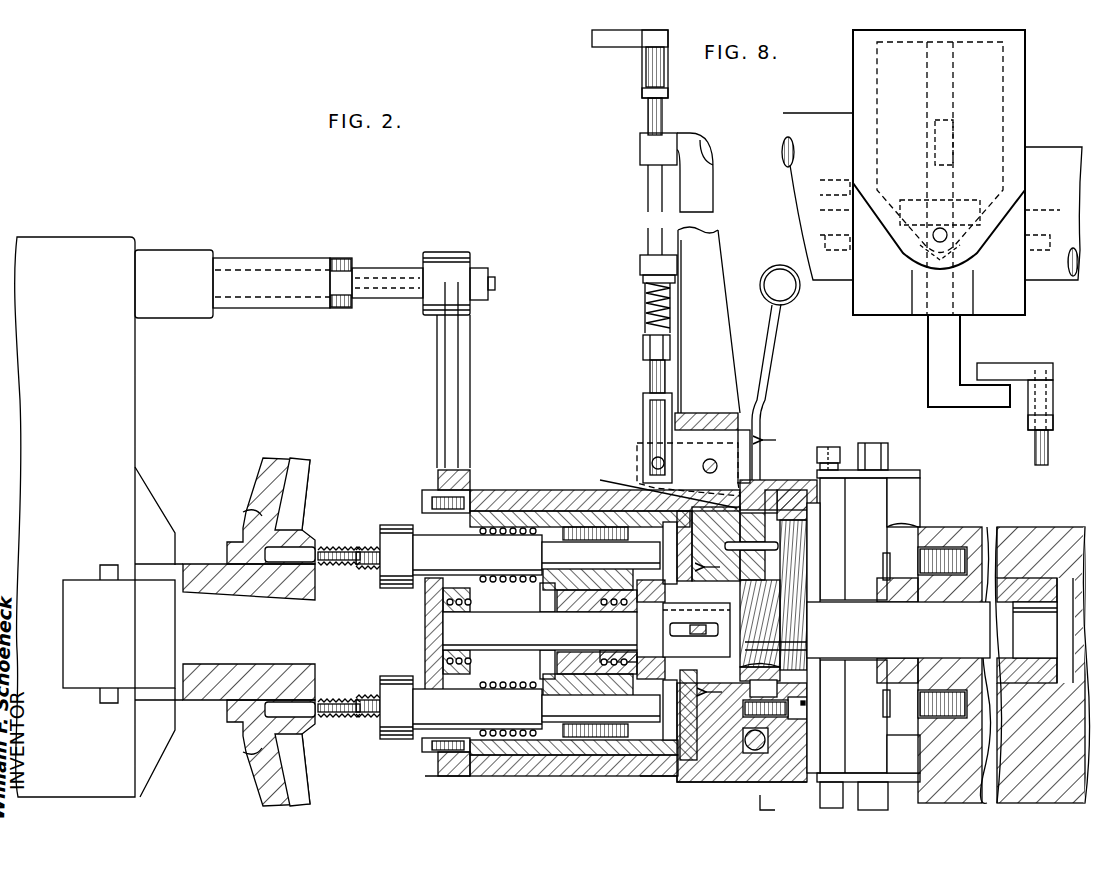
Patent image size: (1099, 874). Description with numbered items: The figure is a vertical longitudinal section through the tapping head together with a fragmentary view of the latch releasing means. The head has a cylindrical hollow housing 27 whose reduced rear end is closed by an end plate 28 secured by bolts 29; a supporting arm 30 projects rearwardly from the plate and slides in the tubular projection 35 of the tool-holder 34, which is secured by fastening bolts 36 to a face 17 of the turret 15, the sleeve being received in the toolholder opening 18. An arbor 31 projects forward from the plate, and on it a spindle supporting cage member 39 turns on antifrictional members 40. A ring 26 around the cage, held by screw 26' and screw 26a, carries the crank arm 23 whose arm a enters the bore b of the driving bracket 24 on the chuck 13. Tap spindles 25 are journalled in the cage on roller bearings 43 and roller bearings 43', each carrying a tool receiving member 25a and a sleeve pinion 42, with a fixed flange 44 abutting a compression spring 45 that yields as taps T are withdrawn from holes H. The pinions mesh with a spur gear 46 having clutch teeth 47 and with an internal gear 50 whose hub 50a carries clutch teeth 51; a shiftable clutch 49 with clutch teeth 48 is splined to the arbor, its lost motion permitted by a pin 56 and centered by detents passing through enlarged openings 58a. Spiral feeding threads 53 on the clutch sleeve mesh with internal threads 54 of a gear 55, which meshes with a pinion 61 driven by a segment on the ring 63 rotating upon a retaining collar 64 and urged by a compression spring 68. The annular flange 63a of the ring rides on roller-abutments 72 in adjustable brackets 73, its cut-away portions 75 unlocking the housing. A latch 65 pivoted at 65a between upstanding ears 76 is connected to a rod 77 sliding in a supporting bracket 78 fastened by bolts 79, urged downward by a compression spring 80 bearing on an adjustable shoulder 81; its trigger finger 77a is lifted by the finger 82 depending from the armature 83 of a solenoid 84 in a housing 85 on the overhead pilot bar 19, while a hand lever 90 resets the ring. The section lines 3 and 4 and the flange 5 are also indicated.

In FIG. 2, the driven chuck 13 is at (58, 252).
In FIG. 2, the driving bracket 24 is at (283, 264).
In FIG. 2, the bore of the bracket b is at (340, 262).
In FIG. 2, the laterally extending arm a is at (376, 268).
In FIG. 2, the crank arm 23 is at (463, 384).
In FIG. 2, the spindle flange 5 is at (292, 462).
In FIG. 2, the holes H is at (300, 550).
In FIG. 2, the taps T is at (355, 567).
In FIG. 2, the housing 27 is at (490, 492).
In FIG. 2, the spindle supporting cage member 39 is at (543, 526).
In FIG. 2, the screw 26' is at (426, 626).
In FIG. 2, the screw 26a is at (425, 502).
In FIG. 2, the ring 26 is at (442, 794).
In FIG. 2, the antifrictional members 40 is at (427, 626).
In FIG. 2, the roller bearings 43 is at (481, 624).
In FIG. 2, the fixed flange 44 is at (545, 582).
In FIG. 2, the roller bearings 43' is at (590, 629).
In FIG. 2, the arbor 31 is at (540, 631).
In FIG. 2, the tap spindles 25 is at (417, 632).
In FIG. 2, the compression spring 45 is at (477, 632).
In FIG. 2, the tool receiving member 25a is at (405, 580).
In FIG. 2, the sleeve pinion 42 is at (645, 545).
In FIG. 2, the clutch teeth 48 is at (660, 699).
In FIG. 2, the internal gear 50 is at (643, 532).
In FIG. 2, the shiftable clutch 49 is at (648, 790).
In FIG. 2, the spur gear 46 is at (652, 594).
In FIG. 2, the clutch teeth 47 is at (650, 668).
In FIG. 2, the hub 50a is at (700, 775).
In FIG. 2, the pin 56 is at (696, 631).
In FIG. 2, the enlarged openings 58a is at (694, 619).
In FIG. 2, the section line 3 is at (720, 629).
In FIG. 2, the end plate 28 is at (790, 600).
In FIG. 2, the spiral feeding threads 53 is at (760, 639).
In FIG. 2, the pinion 61 is at (785, 533).
In FIG. 2, the retaining collar 64 is at (808, 522).
In FIG. 2, the internal threads 54 is at (795, 570).
In FIG. 2, the clutch teeth 51 is at (782, 674).
In FIG. 2, the gear 55 is at (780, 686).
In FIG. 2, the bolts 29 is at (800, 712).
In FIG. 2, the cut-away portions 75 is at (812, 712).
In FIG. 2, the compression spring 68 is at (752, 753).
In FIG. 2, the ring 63 is at (763, 481).
In FIG. 2, the annular flange 63a is at (803, 482).
In FIG. 2, the roller-abutments 72 is at (815, 520).
In FIG. 2, the adjustable brackets 73 is at (897, 468).
In FIG. 2, the tool-holder 34 is at (908, 510).
In FIG. 2, the face of the turret 17 is at (903, 758).
In FIG. 2, the turret 15 is at (950, 534).
In FIG. 2, the fastening bolts 36 is at (886, 560).
In FIG. 2, the toolholder opening 18 is at (1063, 578).
In FIG. 2, the tubular projection 35 is at (952, 598).
In FIG. 2, the supporting arm 30 is at (960, 626).
In FIG. 2, the section line 4 is at (776, 624).
In FIG. 2, the latch 65 is at (688, 486).
In FIG. 2, the pivot 65a is at (703, 467).
In FIG. 2, the upstanding ears 76 is at (740, 434).
In FIG. 2, the bolts 79 is at (722, 414).
In FIG. 2, the supporting bracket 78 is at (708, 276).
In FIG. 2, the compression spring 80 is at (646, 300).
In FIG. 2, the adjustable shoulder 81 is at (643, 348).
In FIG. 2, the rod 77 is at (650, 373).
In FIG. 8, the rod 77 is at (1040, 448).
In FIG. 2, the trigger finger 77a is at (604, 40).
In FIG. 8, the trigger finger 77a is at (1005, 367).
In FIG. 2, the hand lever 90 is at (762, 378).
In FIG. 8, the housing 85 is at (1017, 63).
In FIG. 8, the solenoid 84 is at (947, 165).
In FIG. 8, the armature 83 is at (950, 160).
In FIG. 8, the overhead pilot bar 19 is at (803, 142).
In FIG. 8, the finger 82 is at (985, 398).